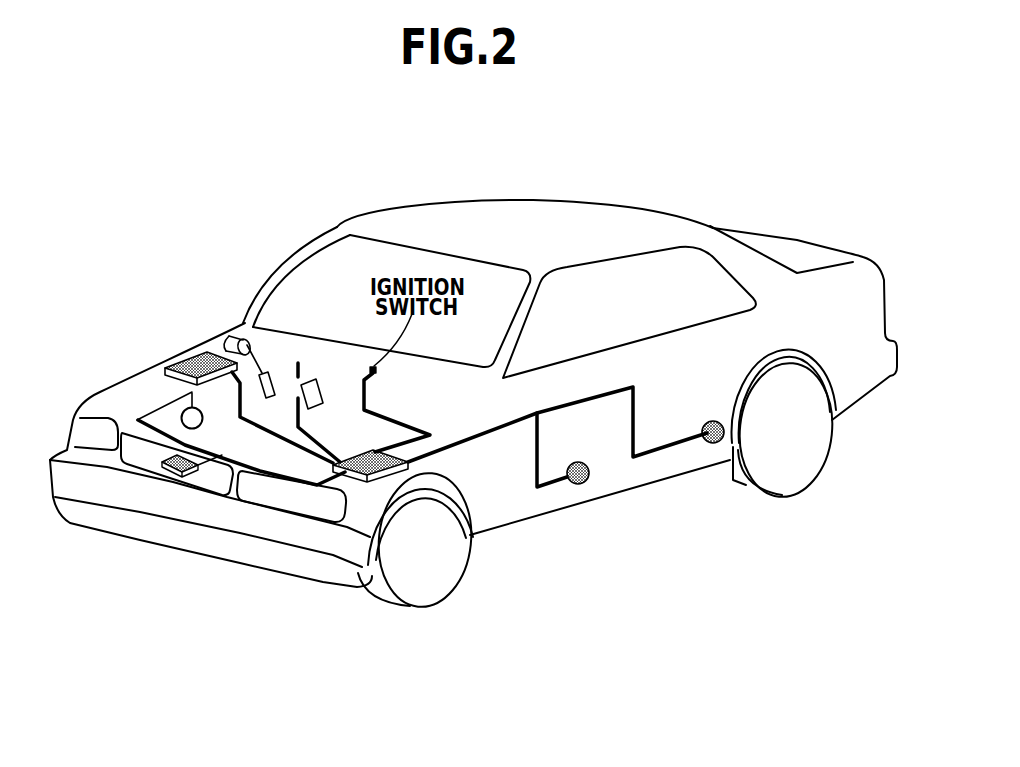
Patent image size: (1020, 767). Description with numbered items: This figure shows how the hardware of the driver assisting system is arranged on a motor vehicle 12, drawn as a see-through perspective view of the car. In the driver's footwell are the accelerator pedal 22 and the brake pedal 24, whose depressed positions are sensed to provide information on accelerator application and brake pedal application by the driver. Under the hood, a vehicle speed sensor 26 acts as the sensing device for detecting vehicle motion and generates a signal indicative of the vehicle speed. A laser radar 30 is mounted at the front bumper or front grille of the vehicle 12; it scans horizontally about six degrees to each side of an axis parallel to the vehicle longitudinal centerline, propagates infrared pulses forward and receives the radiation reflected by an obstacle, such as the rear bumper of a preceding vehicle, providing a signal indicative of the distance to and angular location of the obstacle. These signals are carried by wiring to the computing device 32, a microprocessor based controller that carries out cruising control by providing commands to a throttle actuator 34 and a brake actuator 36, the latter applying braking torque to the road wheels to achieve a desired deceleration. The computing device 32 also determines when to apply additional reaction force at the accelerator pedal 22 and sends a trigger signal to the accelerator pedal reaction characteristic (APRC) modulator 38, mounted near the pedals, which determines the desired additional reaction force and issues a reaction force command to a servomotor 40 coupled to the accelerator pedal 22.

The motor vehicle 12 is at (672, 197).
The accelerator pedal 22 is at (265, 377).
The brake pedal 24 is at (310, 381).
The vehicle speed sensor 26 is at (184, 412).
The laser radar 30 is at (170, 473).
The computing device 32 is at (378, 480).
The throttle actuator 34 is at (579, 485).
The brake actuator 36 is at (714, 445).
The accelerator pedal reaction characteristic (APRC) modulator 38 is at (187, 353).
The servomotor 40 is at (227, 335).